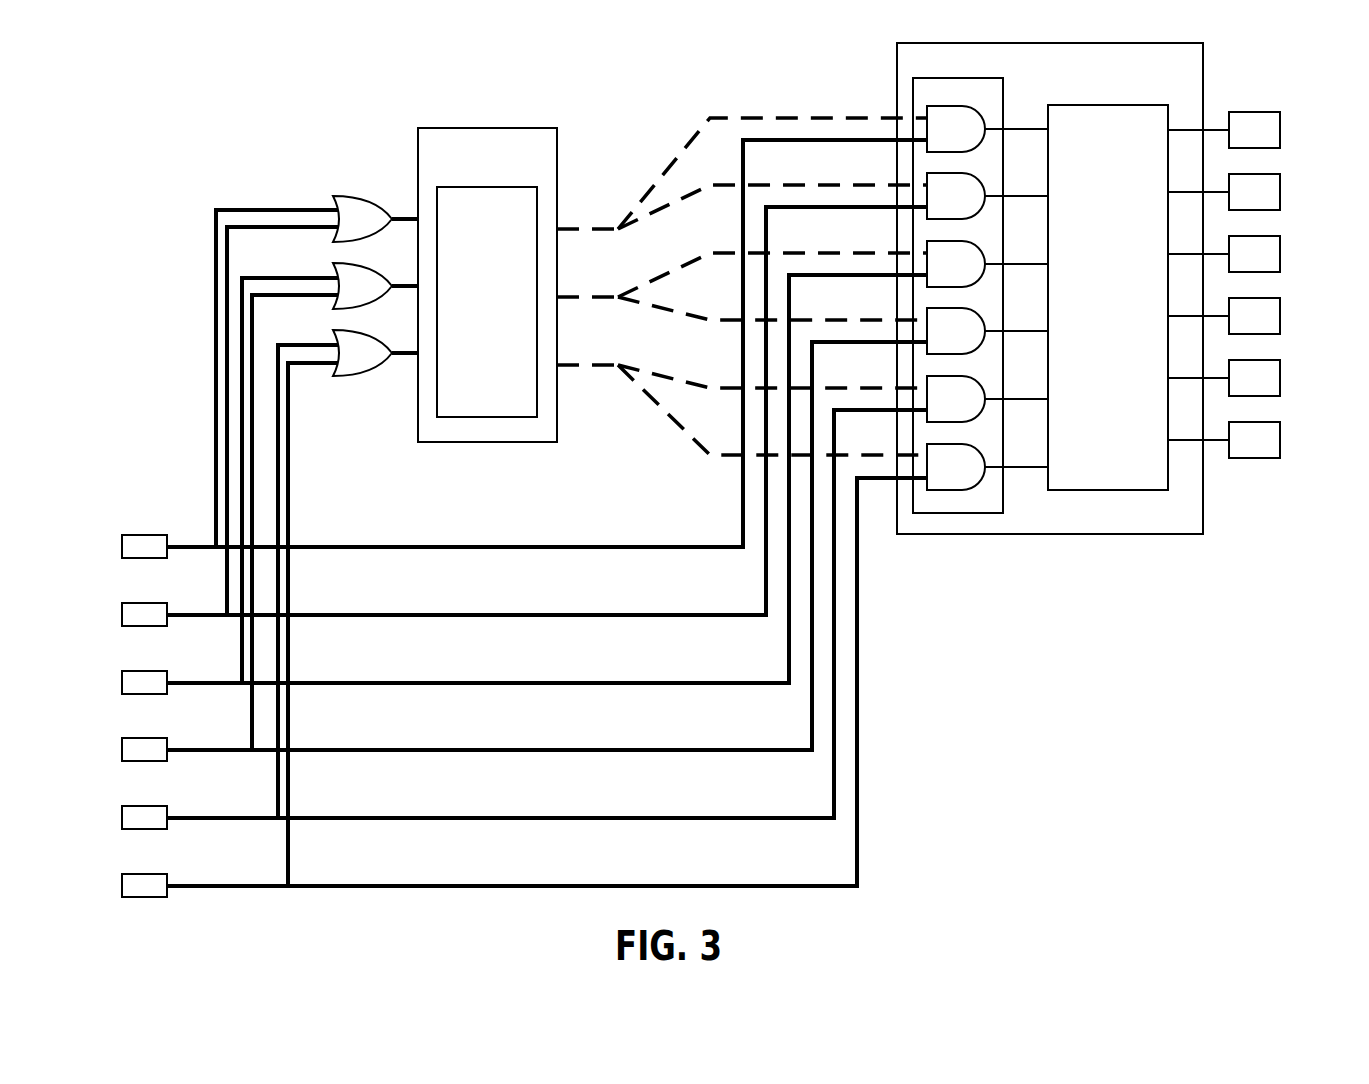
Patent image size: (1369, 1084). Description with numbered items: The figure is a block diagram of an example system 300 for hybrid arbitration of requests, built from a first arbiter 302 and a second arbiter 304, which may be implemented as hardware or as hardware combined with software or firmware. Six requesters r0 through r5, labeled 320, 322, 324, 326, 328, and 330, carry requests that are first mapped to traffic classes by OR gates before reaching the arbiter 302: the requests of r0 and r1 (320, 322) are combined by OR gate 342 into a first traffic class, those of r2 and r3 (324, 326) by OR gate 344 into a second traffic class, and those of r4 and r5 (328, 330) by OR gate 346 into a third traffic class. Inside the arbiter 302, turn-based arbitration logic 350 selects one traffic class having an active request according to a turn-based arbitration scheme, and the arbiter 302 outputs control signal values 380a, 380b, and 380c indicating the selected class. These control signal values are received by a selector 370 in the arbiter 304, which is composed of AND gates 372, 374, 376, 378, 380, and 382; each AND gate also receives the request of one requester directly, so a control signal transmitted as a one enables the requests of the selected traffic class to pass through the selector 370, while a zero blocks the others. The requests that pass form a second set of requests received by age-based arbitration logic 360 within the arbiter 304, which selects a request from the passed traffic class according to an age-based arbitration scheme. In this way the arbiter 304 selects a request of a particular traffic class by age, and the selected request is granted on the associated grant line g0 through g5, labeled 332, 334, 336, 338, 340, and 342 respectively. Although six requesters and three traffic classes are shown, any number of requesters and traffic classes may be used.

The system 300 is at (1232, 862).
The arbiter 302 is at (557, 142).
The arbiter 304 is at (1142, 534).
The requester r0 320 is at (121, 546).
The requester r1 322 is at (121, 614).
The requester r2 324 is at (121, 682).
The requester r3 326 is at (121, 749).
The requester r4 328 is at (121, 817).
The requester r5 330 is at (121, 885).
The grant line g0 332 is at (1280, 126).
The grant line g1 334 is at (1280, 188).
The grant line g2 336 is at (1280, 250).
The grant line g3 338 is at (1280, 312).
The grant line g4 340 is at (1280, 374).
The OR gate 342 is at (1303, 430).
The OR gate 344 is at (375, 286).
The OR gate 346 is at (375, 353).
The turn-based arbitration logic 350 is at (537, 292).
The age-based arbitration logic 360 is at (1099, 490).
The selector 370 is at (912, 105).
The AND gate 372 is at (987, 129).
The AND gate 374 is at (987, 196).
The AND gate 376 is at (987, 264).
The AND gate 378 is at (987, 331).
The AND gate 380 is at (987, 399).
The AND gate 382 is at (987, 467).
The control signal value 380a is at (570, 229).
The control signal value 380b is at (597, 297).
The control signal value 380c is at (570, 365).